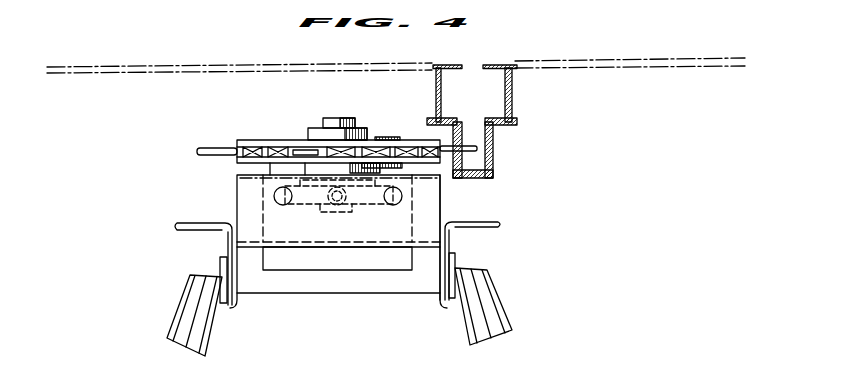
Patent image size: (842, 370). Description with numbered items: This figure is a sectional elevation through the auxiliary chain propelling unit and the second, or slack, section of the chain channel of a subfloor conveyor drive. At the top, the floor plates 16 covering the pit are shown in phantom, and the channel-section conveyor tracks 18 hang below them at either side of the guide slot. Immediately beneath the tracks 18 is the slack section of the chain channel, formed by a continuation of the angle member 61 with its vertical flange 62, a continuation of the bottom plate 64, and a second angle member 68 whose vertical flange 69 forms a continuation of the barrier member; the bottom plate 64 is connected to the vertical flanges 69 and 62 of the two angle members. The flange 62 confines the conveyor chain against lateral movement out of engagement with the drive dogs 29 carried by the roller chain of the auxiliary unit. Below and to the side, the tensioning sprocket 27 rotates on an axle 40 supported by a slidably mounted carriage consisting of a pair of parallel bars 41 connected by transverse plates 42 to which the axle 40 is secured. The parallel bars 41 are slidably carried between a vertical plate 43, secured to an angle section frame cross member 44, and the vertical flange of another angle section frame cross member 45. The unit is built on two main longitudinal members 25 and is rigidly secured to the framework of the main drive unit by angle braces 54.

The floor plates 16 is at (215, 66).
The conveyor tracks 18 is at (435, 80).
The main longitudinal members 25 is at (218, 229).
The tensioning sprocket 27 is at (272, 140).
The drive dogs 29 is at (222, 152).
The axle 40 is at (346, 127).
The parallel bars 41 is at (283, 205).
The transverse plates 42 is at (362, 206).
The vertical plate 43 is at (350, 258).
The angle section frame cross member 44 is at (410, 285).
The angle section frame cross member 45 is at (445, 216).
The angle braces 54 is at (190, 300).
The angle member 61 is at (502, 128).
The vertical flange 62 is at (494, 160).
The bottom plate 64 is at (486, 177).
The second angle member 68 is at (440, 130).
The vertical flange 69 is at (460, 166).